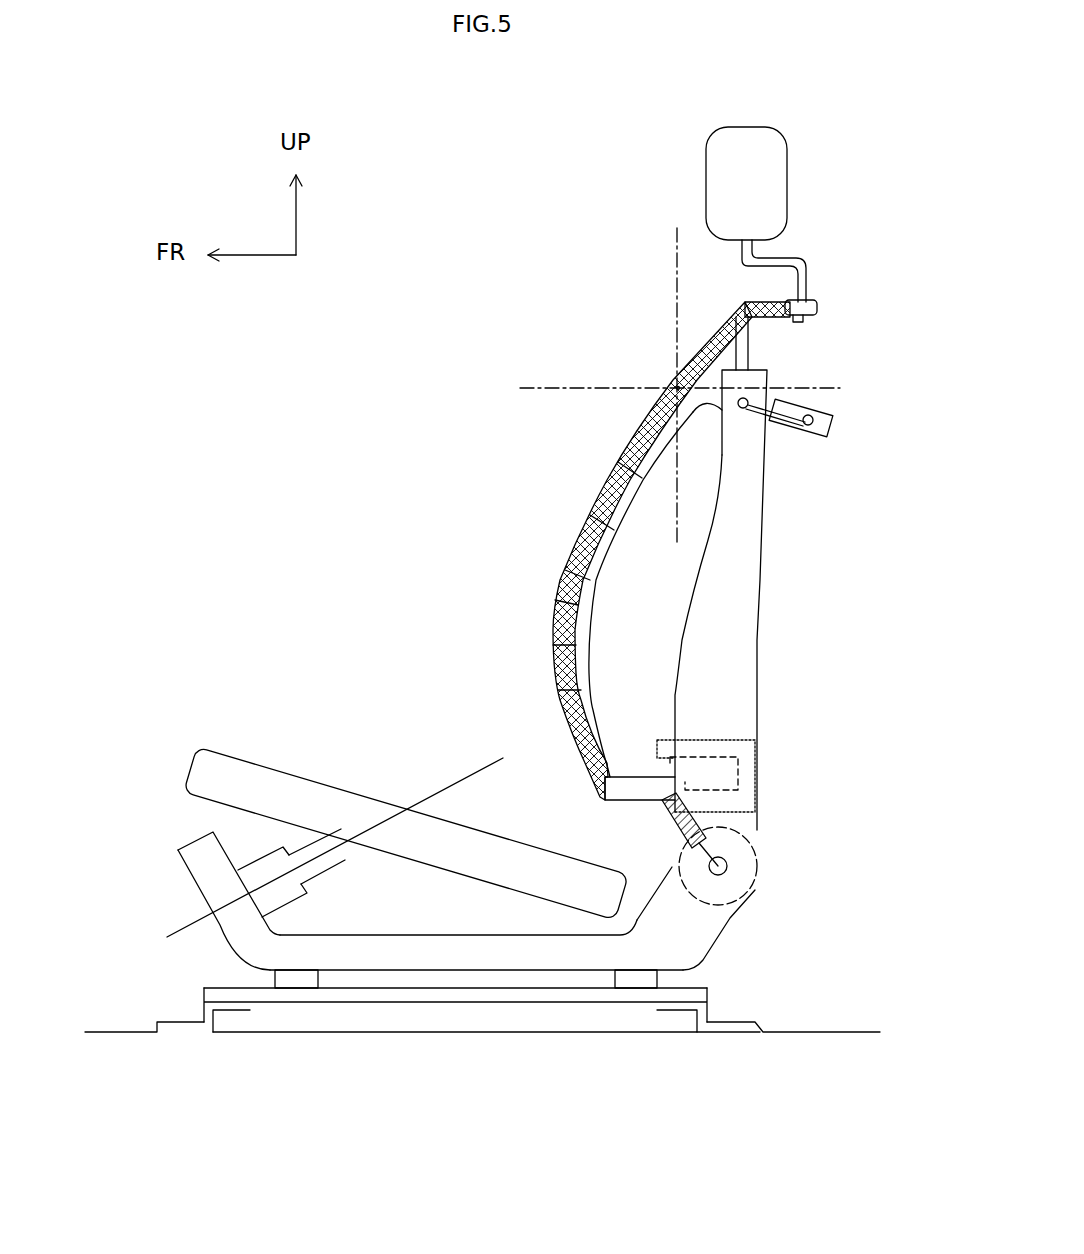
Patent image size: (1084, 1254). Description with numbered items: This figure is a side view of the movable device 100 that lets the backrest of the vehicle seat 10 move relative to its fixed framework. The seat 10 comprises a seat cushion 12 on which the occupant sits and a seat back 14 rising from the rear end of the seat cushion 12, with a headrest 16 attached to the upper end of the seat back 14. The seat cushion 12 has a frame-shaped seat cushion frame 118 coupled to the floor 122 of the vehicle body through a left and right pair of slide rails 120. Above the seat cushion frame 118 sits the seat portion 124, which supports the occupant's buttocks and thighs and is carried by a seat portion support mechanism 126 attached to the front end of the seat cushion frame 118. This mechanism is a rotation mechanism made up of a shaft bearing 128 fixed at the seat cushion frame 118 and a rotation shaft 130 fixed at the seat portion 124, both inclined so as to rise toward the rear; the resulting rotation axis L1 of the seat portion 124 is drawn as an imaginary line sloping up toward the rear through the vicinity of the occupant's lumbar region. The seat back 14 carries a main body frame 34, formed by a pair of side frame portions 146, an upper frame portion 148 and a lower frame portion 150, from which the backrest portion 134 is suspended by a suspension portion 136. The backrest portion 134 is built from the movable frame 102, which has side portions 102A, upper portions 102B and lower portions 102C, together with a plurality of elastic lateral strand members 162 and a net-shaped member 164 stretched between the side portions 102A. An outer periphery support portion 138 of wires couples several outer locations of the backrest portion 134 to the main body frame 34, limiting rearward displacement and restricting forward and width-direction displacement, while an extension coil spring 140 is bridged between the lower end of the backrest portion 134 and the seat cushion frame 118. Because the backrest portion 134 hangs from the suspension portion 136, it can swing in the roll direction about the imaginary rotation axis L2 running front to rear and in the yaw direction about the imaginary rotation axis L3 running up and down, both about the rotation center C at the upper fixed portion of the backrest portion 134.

The vehicle seat 10 is at (418, 507).
The seat cushion 12 is at (445, 819).
The seat back 14 is at (803, 566).
The headrest 16 is at (772, 174).
The main body frame 34 is at (760, 480).
The movable device 100 is at (587, 360).
The movable frame 102 is at (670, 607).
The side portions 102A is at (596, 624).
The upper portions 102B is at (832, 410).
The lower portions 102C is at (647, 775).
The seat cushion frame 118 is at (502, 972).
The slide rails 120 is at (437, 1003).
The floor 122 is at (120, 1030).
The seat portion 124 is at (290, 765).
The seat portion support mechanism 126 is at (242, 834).
The shaft bearing 128 is at (292, 898).
The rotation shaft 130 is at (345, 855).
The backrest portion 134 is at (610, 545).
The suspension portion 136 is at (610, 545).
The outer periphery support portion 138 is at (770, 402).
The extension coil spring 140 is at (668, 822).
The side frame portions 146 is at (796, 566).
The upper frame portion 148 is at (814, 300).
The lower frame portion 150 is at (758, 765).
The lateral strand members 162 is at (610, 551).
The net-shaped member 164 is at (577, 590).
The rotation axis L1 is at (466, 776).
The rotation axis L2 is at (548, 384).
The rotation axis L3 is at (676, 276).
The rotation center C is at (672, 386).